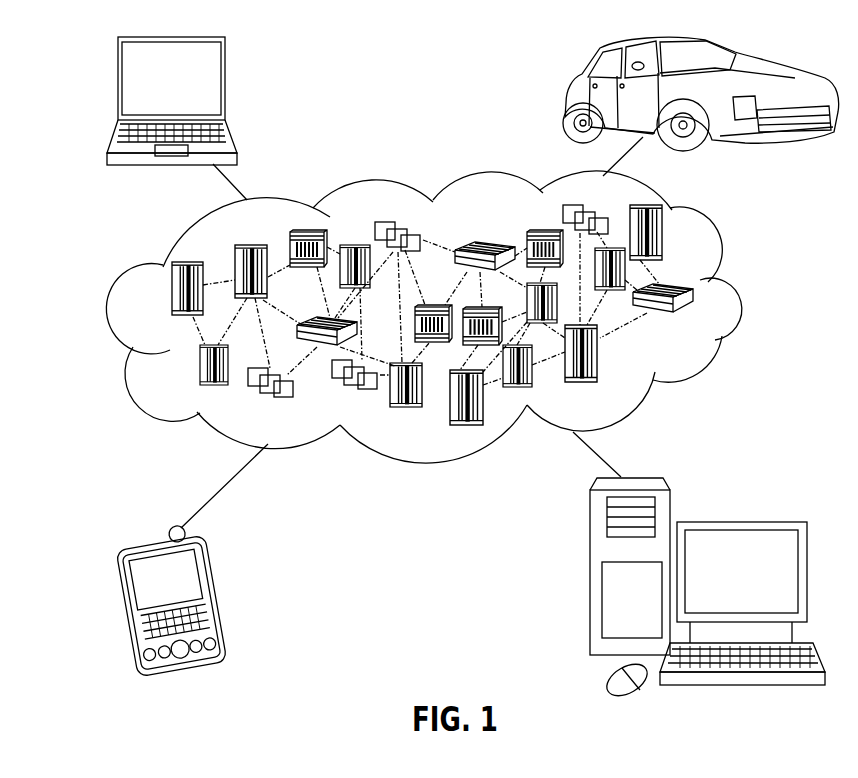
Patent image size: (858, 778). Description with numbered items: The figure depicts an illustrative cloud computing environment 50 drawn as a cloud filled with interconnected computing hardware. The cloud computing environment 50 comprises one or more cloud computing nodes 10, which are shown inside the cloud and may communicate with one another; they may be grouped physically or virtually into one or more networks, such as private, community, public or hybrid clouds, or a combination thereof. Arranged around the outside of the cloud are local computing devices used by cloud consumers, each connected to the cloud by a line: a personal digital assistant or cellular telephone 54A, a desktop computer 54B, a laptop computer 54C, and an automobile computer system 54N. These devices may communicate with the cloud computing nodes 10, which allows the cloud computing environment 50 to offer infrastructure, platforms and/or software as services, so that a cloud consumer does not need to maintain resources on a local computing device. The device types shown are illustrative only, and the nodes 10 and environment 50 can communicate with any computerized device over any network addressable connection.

The cloud computing node 10 is at (700, 322).
The cloud computing environment 50 is at (742, 296).
The personal digital assistant or cellular telephone 54A is at (214, 598).
The desktop computer 54B is at (738, 520).
The laptop computer 54C is at (225, 82).
The automobile computer system 54N is at (566, 98).